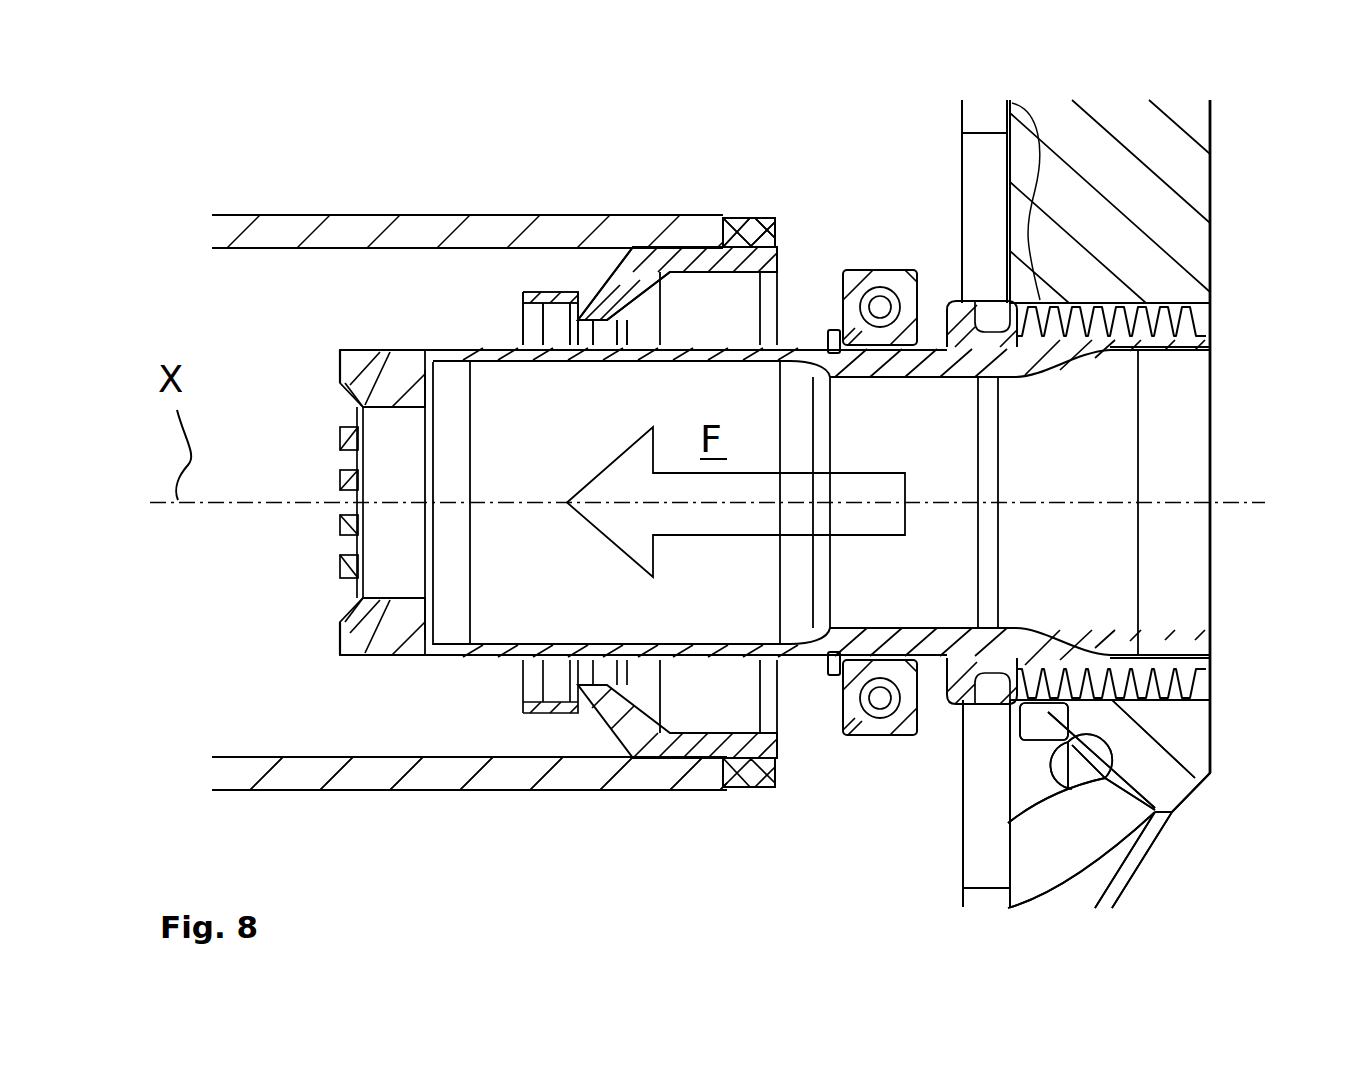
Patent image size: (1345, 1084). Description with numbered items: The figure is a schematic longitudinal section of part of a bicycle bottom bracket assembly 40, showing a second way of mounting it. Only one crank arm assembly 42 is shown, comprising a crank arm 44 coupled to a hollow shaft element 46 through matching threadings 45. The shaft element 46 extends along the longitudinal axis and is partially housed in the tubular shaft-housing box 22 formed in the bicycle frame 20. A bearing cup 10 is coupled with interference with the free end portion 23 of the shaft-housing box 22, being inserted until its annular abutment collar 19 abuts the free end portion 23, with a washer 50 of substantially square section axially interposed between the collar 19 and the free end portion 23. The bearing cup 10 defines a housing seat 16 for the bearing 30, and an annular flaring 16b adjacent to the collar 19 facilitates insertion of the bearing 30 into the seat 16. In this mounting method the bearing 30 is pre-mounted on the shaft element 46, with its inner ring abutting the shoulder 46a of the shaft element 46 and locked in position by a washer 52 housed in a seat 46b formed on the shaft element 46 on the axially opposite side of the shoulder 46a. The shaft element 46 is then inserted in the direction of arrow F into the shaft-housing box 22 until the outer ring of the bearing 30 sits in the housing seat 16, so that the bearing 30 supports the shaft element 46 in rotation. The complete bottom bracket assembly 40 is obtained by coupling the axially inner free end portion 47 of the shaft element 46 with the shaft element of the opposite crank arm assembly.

The bearing cup 10 is at (686, 252).
The housing seat 16 is at (693, 690).
The annular flaring 16b is at (787, 680).
The annular abutment collar 19 is at (762, 232).
The bicycle frame 20 is at (498, 794).
The shaft-housing box 22 is at (260, 757).
The free end portion 23 is at (703, 782).
The bearing 30 is at (880, 737).
The bottom bracket assembly 40 is at (1197, 848).
The crank arm assembly 42 is at (933, 256).
The crank arm 44 is at (1212, 226).
The matching threadings 45 is at (1195, 397).
The shaft element 46 is at (423, 347).
The shoulder 46a is at (947, 677).
The seat 46b is at (840, 672).
The axially inner free end portion 47 is at (338, 478).
The washer 50 is at (745, 232).
The washer 52 is at (830, 330).